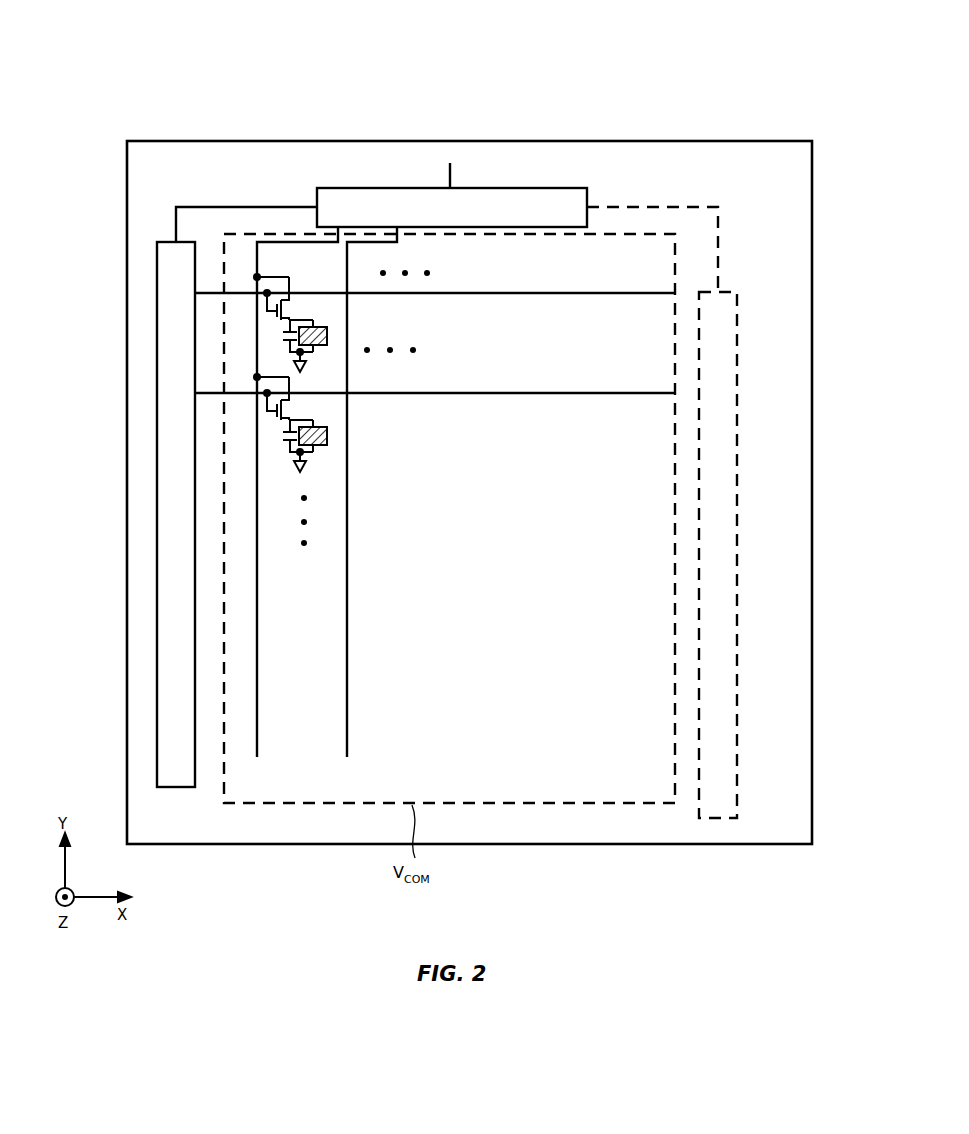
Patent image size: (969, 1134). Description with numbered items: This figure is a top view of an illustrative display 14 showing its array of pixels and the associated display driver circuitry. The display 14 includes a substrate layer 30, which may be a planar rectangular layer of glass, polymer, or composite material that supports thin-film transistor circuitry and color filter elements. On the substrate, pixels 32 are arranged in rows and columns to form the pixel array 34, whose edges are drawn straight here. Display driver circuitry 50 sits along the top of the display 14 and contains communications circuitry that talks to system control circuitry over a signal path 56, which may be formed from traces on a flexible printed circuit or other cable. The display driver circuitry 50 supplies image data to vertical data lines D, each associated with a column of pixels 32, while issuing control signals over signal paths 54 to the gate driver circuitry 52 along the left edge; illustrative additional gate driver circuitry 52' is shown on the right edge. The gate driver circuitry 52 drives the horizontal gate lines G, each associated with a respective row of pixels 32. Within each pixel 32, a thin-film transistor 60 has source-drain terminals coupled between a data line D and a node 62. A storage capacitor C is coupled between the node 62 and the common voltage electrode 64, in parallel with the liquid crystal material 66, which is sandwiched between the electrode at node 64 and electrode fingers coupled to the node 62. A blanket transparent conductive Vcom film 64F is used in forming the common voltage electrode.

The display 14 is at (722, 66).
The substrate layer 30 is at (790, 140).
The pixels 32 is at (340, 368).
The pixel array 34 is at (236, 242).
The display driver circuitry 50 is at (552, 188).
The gate driver circuitry 52 is at (134, 514).
The gate driver circuitry 52' is at (690, 512).
The signal paths 54 is at (260, 206).
The signal path 56 is at (446, 184).
The thin-film transistor 60 is at (260, 318).
The node 62 is at (296, 316).
The common voltage electrode 64 is at (300, 354).
The Vcom film 64F is at (317, 805).
The liquid crystal material 66 is at (327, 340).